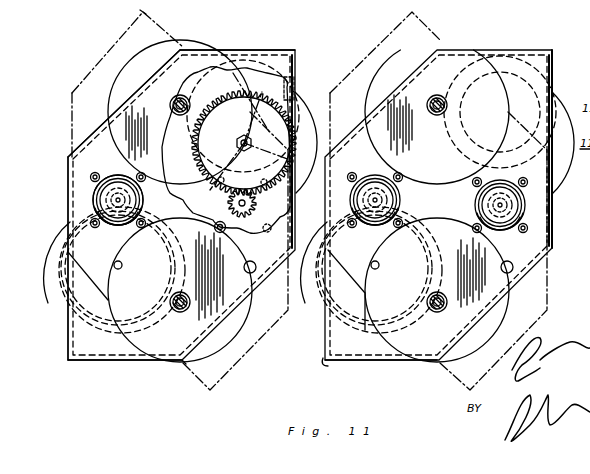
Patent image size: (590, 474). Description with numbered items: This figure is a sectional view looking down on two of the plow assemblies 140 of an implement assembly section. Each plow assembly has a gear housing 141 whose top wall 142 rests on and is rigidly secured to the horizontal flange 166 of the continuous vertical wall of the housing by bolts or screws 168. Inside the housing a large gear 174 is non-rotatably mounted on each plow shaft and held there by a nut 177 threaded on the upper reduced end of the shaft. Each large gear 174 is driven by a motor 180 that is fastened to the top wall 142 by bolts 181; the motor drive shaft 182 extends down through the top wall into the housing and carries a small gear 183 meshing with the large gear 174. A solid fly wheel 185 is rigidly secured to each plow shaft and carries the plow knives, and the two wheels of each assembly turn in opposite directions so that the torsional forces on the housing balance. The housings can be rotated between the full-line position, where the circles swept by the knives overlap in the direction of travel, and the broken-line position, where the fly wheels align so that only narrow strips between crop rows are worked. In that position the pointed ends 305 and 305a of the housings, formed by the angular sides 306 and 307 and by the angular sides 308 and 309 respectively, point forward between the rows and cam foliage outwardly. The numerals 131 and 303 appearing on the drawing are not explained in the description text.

The housing wall 131 is at (588, 95).
The plow assembly 140 is at (203, 27).
The gear housing 141 is at (148, 13).
The top wall 142 is at (97, 350).
The horizontal flange 166 is at (297, 78).
The bolts or screws 168 is at (298, 63).
The large gear 174 is at (273, 117).
The nut 177 is at (250, 144).
The motor 180 is at (115, 177).
The bolts 181 is at (92, 188).
The drive shaft 182 is at (243, 204).
The small gear 183 is at (226, 229).
The fly wheel 185 is at (310, 128).
The mounting plate 303 is at (68, 357).
The pointed end 305 is at (553, 50).
The pointed end 305a is at (348, 372).
The angular side 306 is at (115, 360).
The angular side 307 is at (68, 337).
The angular side 308 is at (299, 53).
The angular side 309 is at (247, 50).